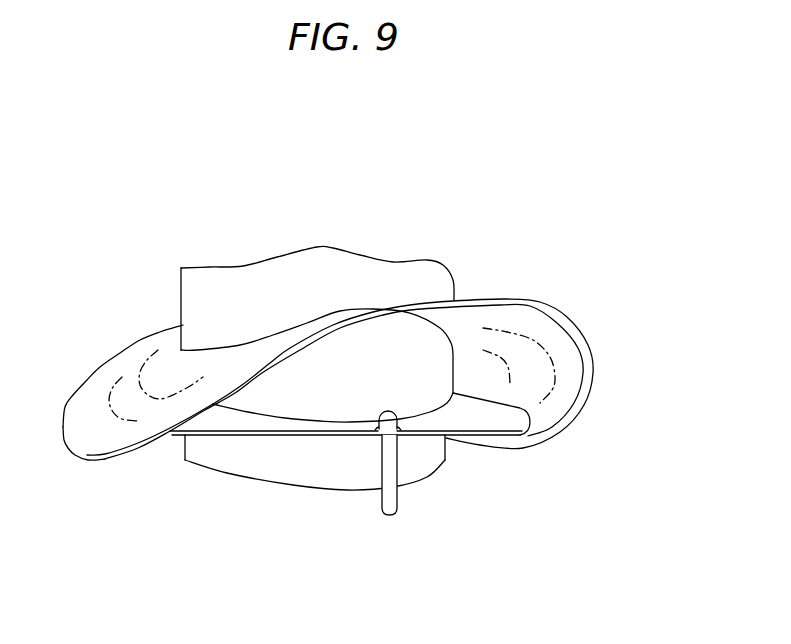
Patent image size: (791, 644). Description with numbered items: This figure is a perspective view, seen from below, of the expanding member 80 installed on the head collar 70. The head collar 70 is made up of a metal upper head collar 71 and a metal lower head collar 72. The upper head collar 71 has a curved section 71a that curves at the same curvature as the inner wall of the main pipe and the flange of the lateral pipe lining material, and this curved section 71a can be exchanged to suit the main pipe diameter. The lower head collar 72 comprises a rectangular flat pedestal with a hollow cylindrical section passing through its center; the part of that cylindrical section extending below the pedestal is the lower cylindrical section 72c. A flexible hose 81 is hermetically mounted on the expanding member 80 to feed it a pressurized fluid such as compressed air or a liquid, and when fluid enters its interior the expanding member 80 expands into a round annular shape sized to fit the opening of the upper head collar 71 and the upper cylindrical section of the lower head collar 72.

The head collar 70 is at (603, 427).
The upper head collar 71 is at (573, 320).
The curved section 71a is at (97, 398).
The lower head collar 72 is at (477, 420).
The lower cylindrical section 72c is at (303, 462).
The expanding member 80 is at (368, 273).
The flexible hose 81 is at (387, 510).